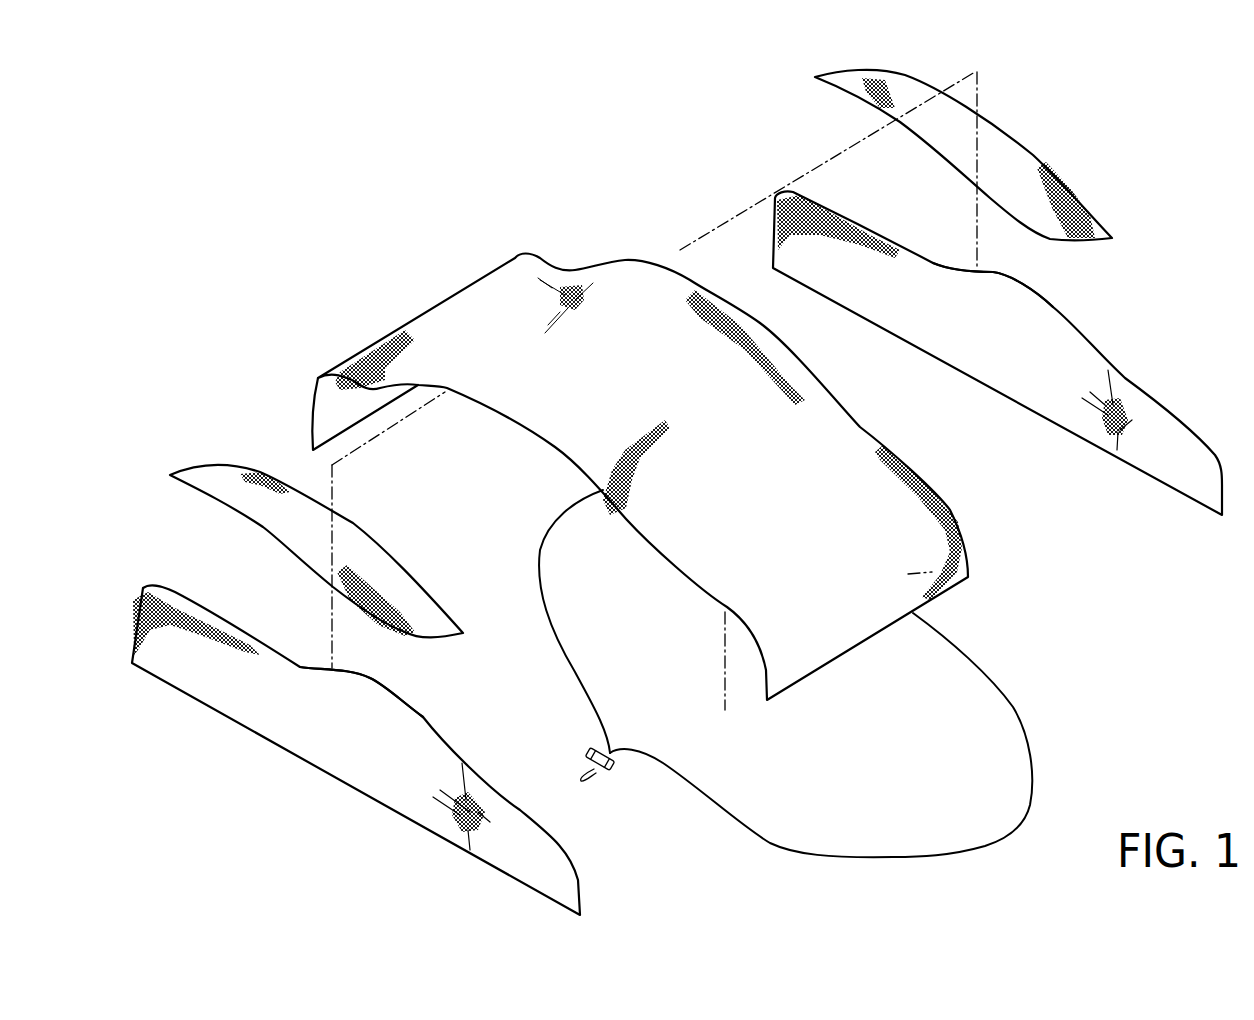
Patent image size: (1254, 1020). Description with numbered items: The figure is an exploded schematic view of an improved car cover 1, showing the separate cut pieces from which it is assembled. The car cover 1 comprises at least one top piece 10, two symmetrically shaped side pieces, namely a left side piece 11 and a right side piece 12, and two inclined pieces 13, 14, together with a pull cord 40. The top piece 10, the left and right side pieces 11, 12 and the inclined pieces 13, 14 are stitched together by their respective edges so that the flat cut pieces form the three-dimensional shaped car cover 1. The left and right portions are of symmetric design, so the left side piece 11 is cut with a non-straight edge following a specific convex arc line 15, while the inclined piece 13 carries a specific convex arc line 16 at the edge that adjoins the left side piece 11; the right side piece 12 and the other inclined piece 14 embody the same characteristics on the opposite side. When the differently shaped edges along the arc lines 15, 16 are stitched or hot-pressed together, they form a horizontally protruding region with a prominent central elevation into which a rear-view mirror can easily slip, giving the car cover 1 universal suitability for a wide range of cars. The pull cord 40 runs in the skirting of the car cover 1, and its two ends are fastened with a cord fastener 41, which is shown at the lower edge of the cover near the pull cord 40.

The car cover 1 is at (403, 284).
The top piece 10 is at (630, 285).
The left side piece 11 is at (317, 737).
The right side piece 12 is at (1018, 385).
The inclined piece 13 is at (397, 578).
The inclined piece 14 is at (1008, 148).
The convex arc line 15 is at (430, 712).
The convex arc line 16 is at (262, 532).
The pull cord 40 is at (1013, 700).
The cord fastener 41 is at (597, 780).